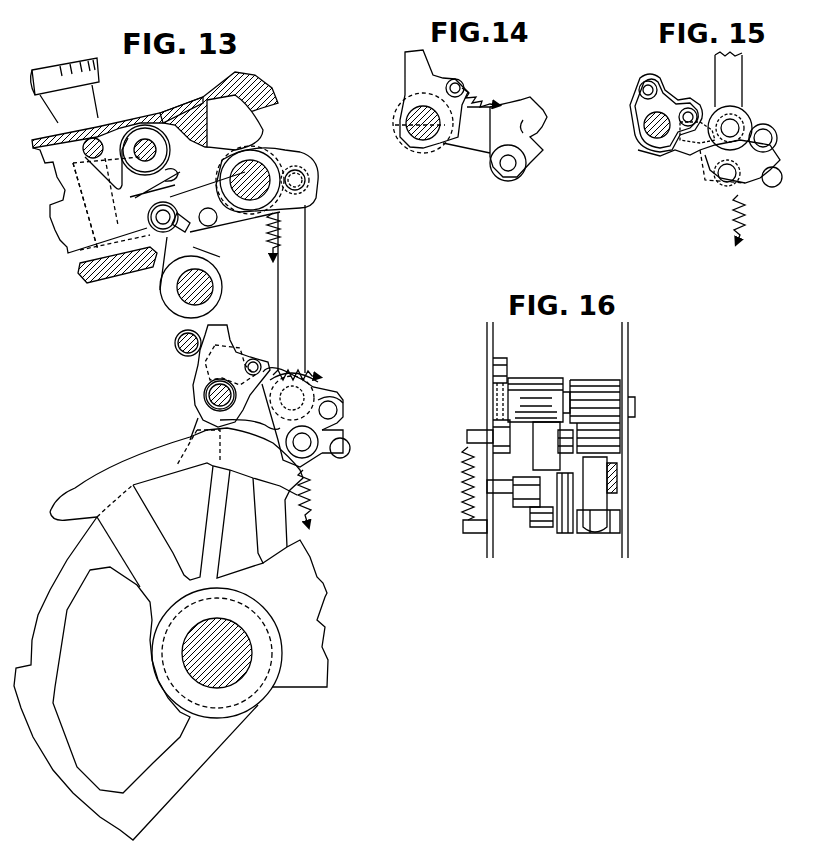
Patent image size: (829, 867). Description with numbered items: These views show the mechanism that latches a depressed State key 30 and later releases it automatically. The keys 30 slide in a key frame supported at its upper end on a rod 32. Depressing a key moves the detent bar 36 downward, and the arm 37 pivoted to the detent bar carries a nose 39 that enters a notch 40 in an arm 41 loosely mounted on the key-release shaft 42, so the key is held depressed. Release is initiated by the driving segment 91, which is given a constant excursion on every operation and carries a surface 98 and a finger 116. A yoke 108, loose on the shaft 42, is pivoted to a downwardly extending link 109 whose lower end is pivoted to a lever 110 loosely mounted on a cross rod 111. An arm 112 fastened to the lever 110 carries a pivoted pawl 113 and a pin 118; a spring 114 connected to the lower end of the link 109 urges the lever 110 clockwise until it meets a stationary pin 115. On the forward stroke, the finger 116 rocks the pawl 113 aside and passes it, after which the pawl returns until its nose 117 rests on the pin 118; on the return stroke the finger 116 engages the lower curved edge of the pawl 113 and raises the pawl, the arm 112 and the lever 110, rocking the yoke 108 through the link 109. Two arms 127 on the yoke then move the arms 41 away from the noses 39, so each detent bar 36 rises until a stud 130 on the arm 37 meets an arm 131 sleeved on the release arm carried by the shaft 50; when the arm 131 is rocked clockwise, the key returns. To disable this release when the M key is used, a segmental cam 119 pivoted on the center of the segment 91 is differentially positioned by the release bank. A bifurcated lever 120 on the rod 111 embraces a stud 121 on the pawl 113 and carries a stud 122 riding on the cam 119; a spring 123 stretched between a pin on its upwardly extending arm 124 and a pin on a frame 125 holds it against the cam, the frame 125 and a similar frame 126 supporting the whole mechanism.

In FIG. 13, the State key 30 is at (58, 63).
In FIG. 13, the rod 32 is at (242, 107).
In FIG. 13, the detent bar 36 is at (67, 250).
In FIG. 13, the arm 37 is at (150, 175).
In FIG. 13, the nose 39 is at (181, 175).
In FIG. 13, the notch 40 is at (205, 250).
In FIG. 13, the arm 41 is at (215, 228).
In FIG. 13, the key-release shaft 42 is at (256, 168).
In FIG. 13, the shaft 50 is at (172, 302).
In FIG. 13, the driving segment 91 is at (163, 800).
In FIG. 13, the surface 98 is at (113, 580).
In FIG. 13, the yoke 108 is at (299, 160).
In FIG. 13, the link 109 is at (300, 250).
In FIG. 15, the link 109 is at (742, 73).
In FIG. 16, the link 109 is at (610, 505).
In FIG. 13, the lever 110 is at (345, 430).
In FIG. 15, the lever 110 is at (640, 150).
In FIG. 16, the lever 110 is at (580, 387).
In FIG. 13, the cross rod 111 is at (209, 393).
In FIG. 14, the cross rod 111 is at (418, 135).
In FIG. 15, the cross rod 111 is at (645, 130).
In FIG. 16, the cross rod 111 is at (640, 407).
In FIG. 15, the arm 112 is at (640, 110).
In FIG. 16, the arm 112 is at (573, 386).
In FIG. 15, the pawl 113 is at (748, 185).
In FIG. 16, the pawl 113 is at (560, 527).
In FIG. 13, the spring 114 is at (316, 497).
In FIG. 15, the spring 114 is at (745, 228).
In FIG. 13, the stationary pin 115 is at (350, 448).
In FIG. 15, the stationary pin 115 is at (782, 179).
In FIG. 16, the stationary pin 115 is at (607, 535).
In FIG. 13, the finger 116 is at (193, 443).
In FIG. 15, the nose 117 is at (668, 156).
In FIG. 15, the pin 118 is at (690, 107).
In FIG. 16, the pin 118 is at (558, 437).
In FIG. 13, the segmental cam 119 is at (92, 487).
In FIG. 13, the lever 120 is at (327, 386).
In FIG. 14, the lever 120 is at (457, 138).
In FIG. 16, the lever 120 is at (520, 385).
In FIG. 13, the stud 121 is at (340, 412).
In FIG. 15, the stud 121 is at (770, 135).
In FIG. 16, the stud 121 is at (532, 512).
In FIG. 13, the stud 122 is at (310, 449).
In FIG. 14, the stud 122 is at (508, 172).
In FIG. 16, the stud 122 is at (493, 487).
In FIG. 13, the spring 123 is at (283, 375).
In FIG. 14, the spring 123 is at (485, 96).
In FIG. 16, the spring 123 is at (466, 483).
In FIG. 13, the arm 124 is at (227, 340).
In FIG. 14, the arm 124 is at (440, 78).
In FIG. 16, the arm 124 is at (497, 398).
In FIG. 16, the frame 125 is at (490, 548).
In FIG. 16, the frame 126 is at (628, 460).
In FIG. 13, the arm 127 is at (186, 184).
In FIG. 13, the stud 130 is at (156, 214).
In FIG. 13, the arm 131 is at (178, 274).